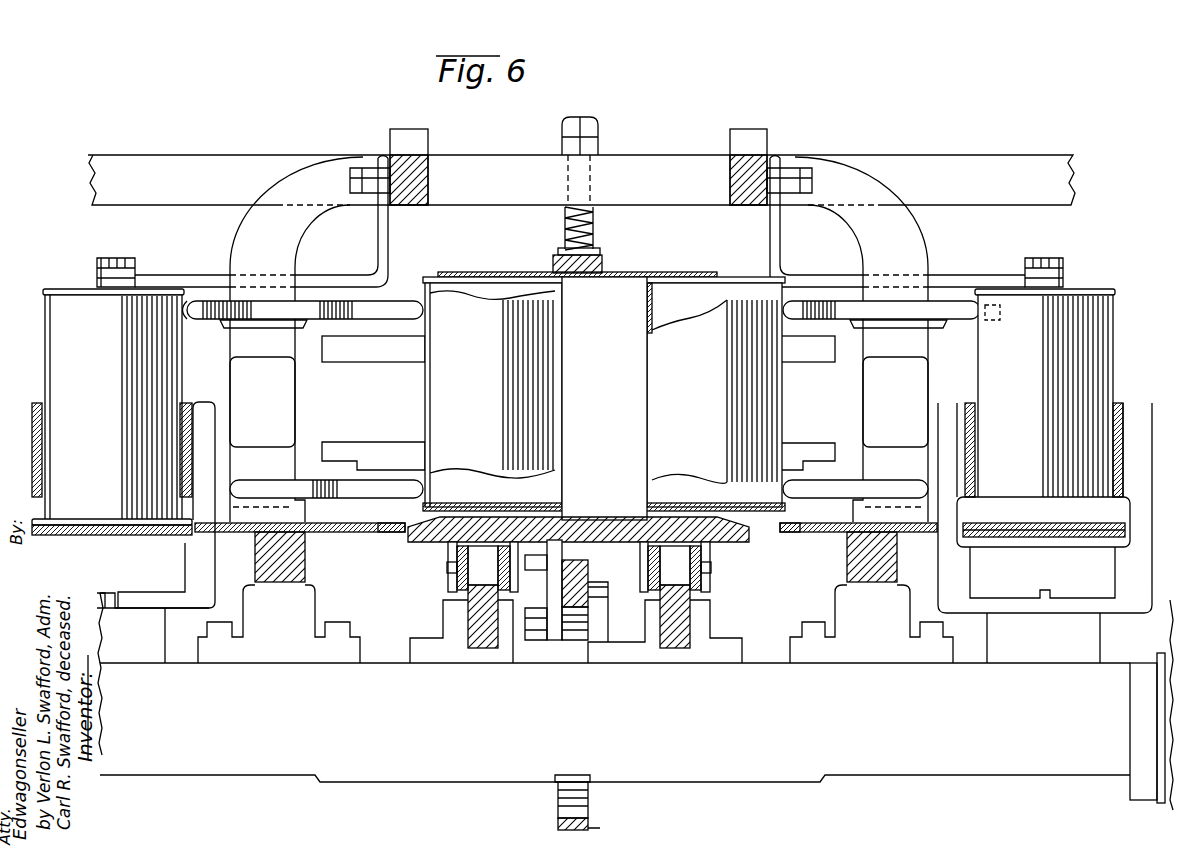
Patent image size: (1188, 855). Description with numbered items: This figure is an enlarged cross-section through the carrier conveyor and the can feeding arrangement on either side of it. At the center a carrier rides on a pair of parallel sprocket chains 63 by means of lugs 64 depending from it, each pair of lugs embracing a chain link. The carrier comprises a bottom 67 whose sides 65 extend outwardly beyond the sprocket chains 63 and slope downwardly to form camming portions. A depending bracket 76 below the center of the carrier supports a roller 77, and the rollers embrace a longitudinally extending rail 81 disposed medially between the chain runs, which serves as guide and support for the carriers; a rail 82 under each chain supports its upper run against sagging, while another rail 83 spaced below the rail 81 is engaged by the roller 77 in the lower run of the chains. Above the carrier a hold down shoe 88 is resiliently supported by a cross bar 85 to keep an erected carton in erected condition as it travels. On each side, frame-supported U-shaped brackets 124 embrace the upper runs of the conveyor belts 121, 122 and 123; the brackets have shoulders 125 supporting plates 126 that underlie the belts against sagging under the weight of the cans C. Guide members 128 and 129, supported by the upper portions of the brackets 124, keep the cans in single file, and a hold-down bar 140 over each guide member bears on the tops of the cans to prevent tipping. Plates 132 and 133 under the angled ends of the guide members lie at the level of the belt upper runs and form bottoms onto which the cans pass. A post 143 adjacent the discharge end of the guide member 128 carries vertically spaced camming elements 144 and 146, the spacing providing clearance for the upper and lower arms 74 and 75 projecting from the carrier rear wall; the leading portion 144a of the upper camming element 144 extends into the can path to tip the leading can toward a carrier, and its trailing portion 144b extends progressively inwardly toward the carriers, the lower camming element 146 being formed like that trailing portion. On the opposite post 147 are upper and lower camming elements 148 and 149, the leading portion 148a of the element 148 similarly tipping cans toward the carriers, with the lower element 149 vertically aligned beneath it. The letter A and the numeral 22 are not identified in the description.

The cross bar 85 is at (674, 159).
The hold down shoe 88 is at (604, 262).
The hold-down bar 140 is at (191, 275).
The post 143 is at (297, 393).
The post 147 is at (918, 377).
The upper arm 74 is at (394, 364).
The lower arm 75 is at (394, 450).
The lower camming element 149 is at (832, 488).
The upper camming element 144 is at (390, 300).
The leading portion 144a is at (191, 318).
The trailing portion 144b is at (415, 320).
The upper camming element 148 is at (810, 300).
The leading portion 148a is at (948, 322).
The lower camming element 146 is at (338, 496).
The plate A is at (640, 272).
The can C is at (56, 326).
The guide member 128 is at (46, 407).
The conveyor belt 121 is at (204, 402).
The conveyor belt 122 is at (103, 520).
The shoulder 125 is at (190, 533).
The plate 126 is at (95, 535).
The plate 132 is at (345, 533).
The plate 133 is at (790, 533).
The side 65 is at (430, 523).
The bottom 67 is at (598, 520).
The U-shaped bracket 124 is at (1137, 420).
The guide member 129 is at (1120, 403).
The conveyor belt 123 is at (1018, 522).
The lug 64 is at (456, 560).
The sprocket chain 63 is at (700, 560).
The rail 82 is at (468, 597).
The bracket 76 is at (552, 590).
The rail 81 is at (580, 557).
The roller 77 is at (573, 640).
The rail 83 is at (557, 822).
The base 22 is at (1165, 626).